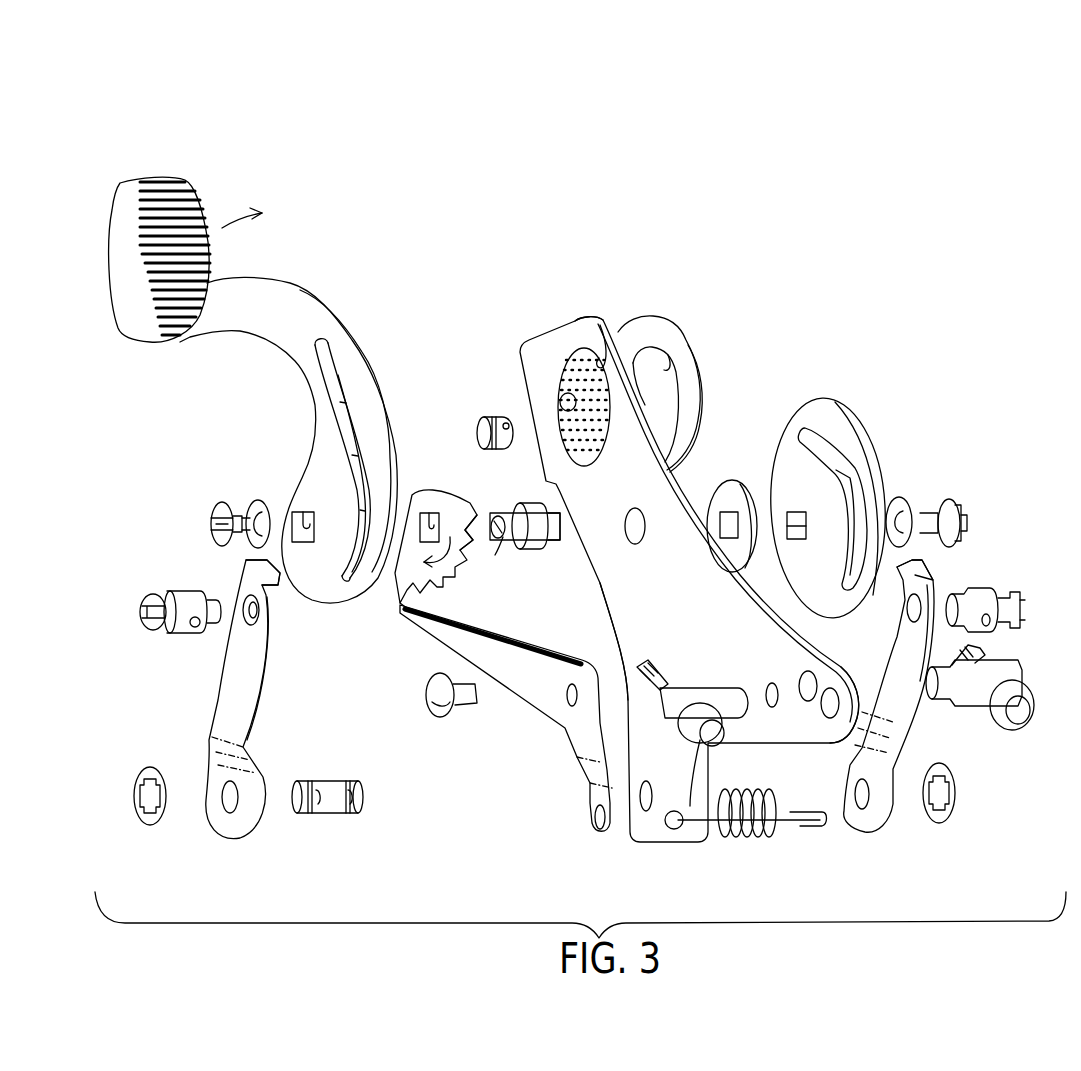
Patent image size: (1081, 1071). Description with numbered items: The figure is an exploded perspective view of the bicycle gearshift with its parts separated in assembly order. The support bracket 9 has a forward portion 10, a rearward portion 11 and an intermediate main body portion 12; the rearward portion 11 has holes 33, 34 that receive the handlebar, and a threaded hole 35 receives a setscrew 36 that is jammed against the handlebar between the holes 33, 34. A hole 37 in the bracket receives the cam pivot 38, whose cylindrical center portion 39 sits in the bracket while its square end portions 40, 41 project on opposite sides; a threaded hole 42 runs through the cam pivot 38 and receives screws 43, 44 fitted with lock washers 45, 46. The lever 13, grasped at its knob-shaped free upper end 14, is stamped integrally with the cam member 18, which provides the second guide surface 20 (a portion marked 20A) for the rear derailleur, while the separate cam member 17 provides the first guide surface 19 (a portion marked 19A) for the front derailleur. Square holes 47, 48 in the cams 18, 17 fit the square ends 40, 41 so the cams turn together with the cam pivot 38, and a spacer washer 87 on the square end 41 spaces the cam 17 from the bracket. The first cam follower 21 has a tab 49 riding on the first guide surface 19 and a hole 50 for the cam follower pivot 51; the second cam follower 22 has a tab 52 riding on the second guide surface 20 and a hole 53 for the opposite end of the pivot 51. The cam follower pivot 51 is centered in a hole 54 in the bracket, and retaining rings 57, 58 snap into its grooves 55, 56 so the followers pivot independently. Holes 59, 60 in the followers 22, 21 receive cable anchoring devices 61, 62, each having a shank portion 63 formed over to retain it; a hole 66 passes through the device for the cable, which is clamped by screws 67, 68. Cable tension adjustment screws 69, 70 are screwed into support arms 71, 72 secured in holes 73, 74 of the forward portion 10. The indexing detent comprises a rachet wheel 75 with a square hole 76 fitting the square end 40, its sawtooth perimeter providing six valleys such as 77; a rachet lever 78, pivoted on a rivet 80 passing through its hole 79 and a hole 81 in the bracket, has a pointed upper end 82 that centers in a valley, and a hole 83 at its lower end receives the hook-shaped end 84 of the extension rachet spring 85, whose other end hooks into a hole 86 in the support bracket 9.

The support bracket 9 is at (688, 492).
The forward portion 10 is at (850, 710).
The rearward portion 11 is at (545, 342).
The main body portion 12 is at (632, 612).
The lever 13 is at (268, 300).
The free upper end 14 is at (130, 303).
The cam member 17 is at (832, 403).
The cam member 18 is at (352, 345).
The first guide surface 19 is at (822, 452).
The cam slot portion 19A is at (836, 472).
The second guide surface 20 is at (355, 405).
The slot portion 20A is at (366, 440).
The first cam follower 21 is at (912, 728).
The second cam follower 22 is at (262, 694).
The hole 33 is at (603, 320).
The hole 34 is at (680, 318).
The threaded hole 35 is at (566, 395).
The setscrew 36 is at (488, 417).
The hole 37 is at (632, 544).
The cam pivot 38 is at (520, 511).
The cylindrical center portion 39 is at (535, 547).
The square end portion 40 is at (503, 537).
The square end portion 41 is at (575, 542).
The threaded hole 42 is at (500, 545).
The screw 43 is at (215, 505).
The screw 44 is at (956, 502).
The lock washer 45 is at (250, 502).
The lock washer 46 is at (905, 498).
The square hole 47 is at (303, 512).
The square hole 48 is at (787, 528).
The tab 49 is at (935, 562).
The hole 50 is at (873, 803).
The cam follower pivot 51 is at (332, 780).
The tab 52 is at (248, 570).
The hole 53 is at (248, 826).
The hole 54 is at (647, 812).
The groove 55 is at (318, 806).
The groove 56 is at (352, 806).
The retaining ring 57 is at (157, 825).
The retaining ring 58 is at (956, 793).
The hole 59 is at (262, 612).
The hole 60 is at (907, 608).
The cable anchoring device 61 is at (188, 592).
The cable anchoring device 62 is at (988, 586).
The shank portion 63 is at (215, 625).
The hole 66 is at (192, 628).
The screw 67 is at (1022, 598).
The screw 68 is at (148, 630).
The cable tension adjustment screw 69 is at (1028, 695).
The cable tension adjustment screw 70 is at (705, 745).
The support arm 71 is at (1005, 667).
The support arm 72 is at (740, 720).
The hole 73 is at (807, 672).
The hole 74 is at (830, 718).
The rachet wheel 75 is at (424, 492).
The square hole 76 is at (432, 510).
The valley 77 is at (448, 580).
The rachet lever 78 is at (528, 682).
The hole 79 is at (568, 704).
The rivet 80 is at (442, 720).
The hole 81 is at (772, 707).
The upper end 82 is at (400, 605).
The hole 83 is at (594, 816).
The hook-shaped end 84 is at (810, 826).
The rachet spring 85 is at (750, 838).
The hole 86 is at (672, 830).
The spacer washer 87 is at (738, 484).